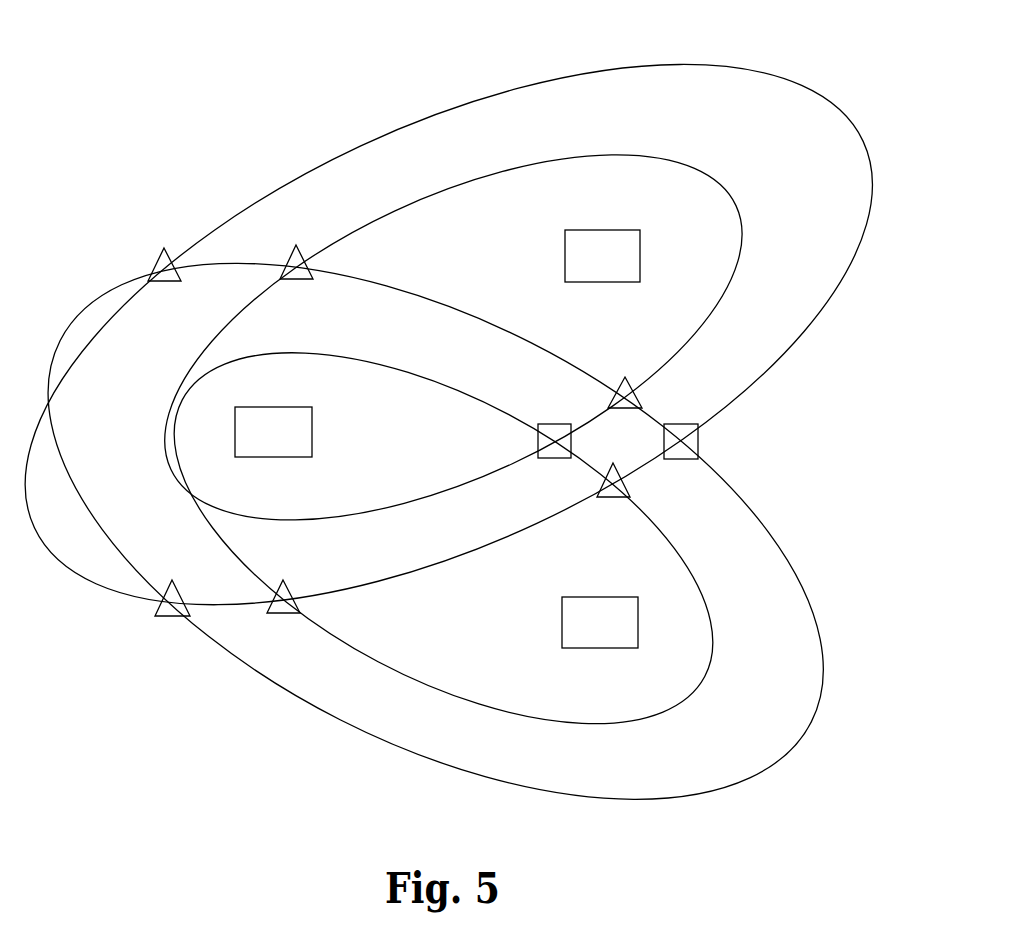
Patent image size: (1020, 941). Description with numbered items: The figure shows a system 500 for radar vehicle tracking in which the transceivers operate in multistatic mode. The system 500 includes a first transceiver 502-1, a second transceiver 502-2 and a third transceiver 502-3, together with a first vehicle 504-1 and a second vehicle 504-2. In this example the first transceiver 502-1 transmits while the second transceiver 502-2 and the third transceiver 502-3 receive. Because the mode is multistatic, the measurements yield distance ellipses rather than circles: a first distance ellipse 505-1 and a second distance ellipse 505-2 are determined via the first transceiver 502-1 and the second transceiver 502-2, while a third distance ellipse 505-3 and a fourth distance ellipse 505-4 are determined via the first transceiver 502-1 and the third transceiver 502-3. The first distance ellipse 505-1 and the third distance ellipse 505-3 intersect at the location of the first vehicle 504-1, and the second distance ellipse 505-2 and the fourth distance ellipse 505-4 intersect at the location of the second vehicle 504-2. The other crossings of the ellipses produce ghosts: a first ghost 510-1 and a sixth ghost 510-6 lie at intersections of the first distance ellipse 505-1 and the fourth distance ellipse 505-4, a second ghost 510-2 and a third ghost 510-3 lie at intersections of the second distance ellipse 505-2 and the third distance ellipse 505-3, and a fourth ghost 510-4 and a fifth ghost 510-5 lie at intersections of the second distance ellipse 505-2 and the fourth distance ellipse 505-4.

The system 500 is at (266, 97).
The first distance ellipse 505-1 is at (661, 157).
The second distance ellipse 505-2 is at (686, 64).
The third distance ellipse 505-3 is at (668, 717).
The fourth distance ellipse 505-4 is at (641, 801).
The first transceiver 502-1 is at (313, 433).
The second transceiver 502-2 is at (603, 229).
The third transceiver 502-3 is at (562, 623).
The first vehicle 504-1 is at (538, 442).
The second vehicle 504-2 is at (700, 442).
The first ghost 510-1 is at (622, 388).
The second ghost 510-2 is at (613, 500).
The third ghost 510-3 is at (289, 592).
The fourth ghost 510-4 is at (167, 617).
The fifth ghost 510-5 is at (160, 266).
The sixth ghost 510-6 is at (292, 265).